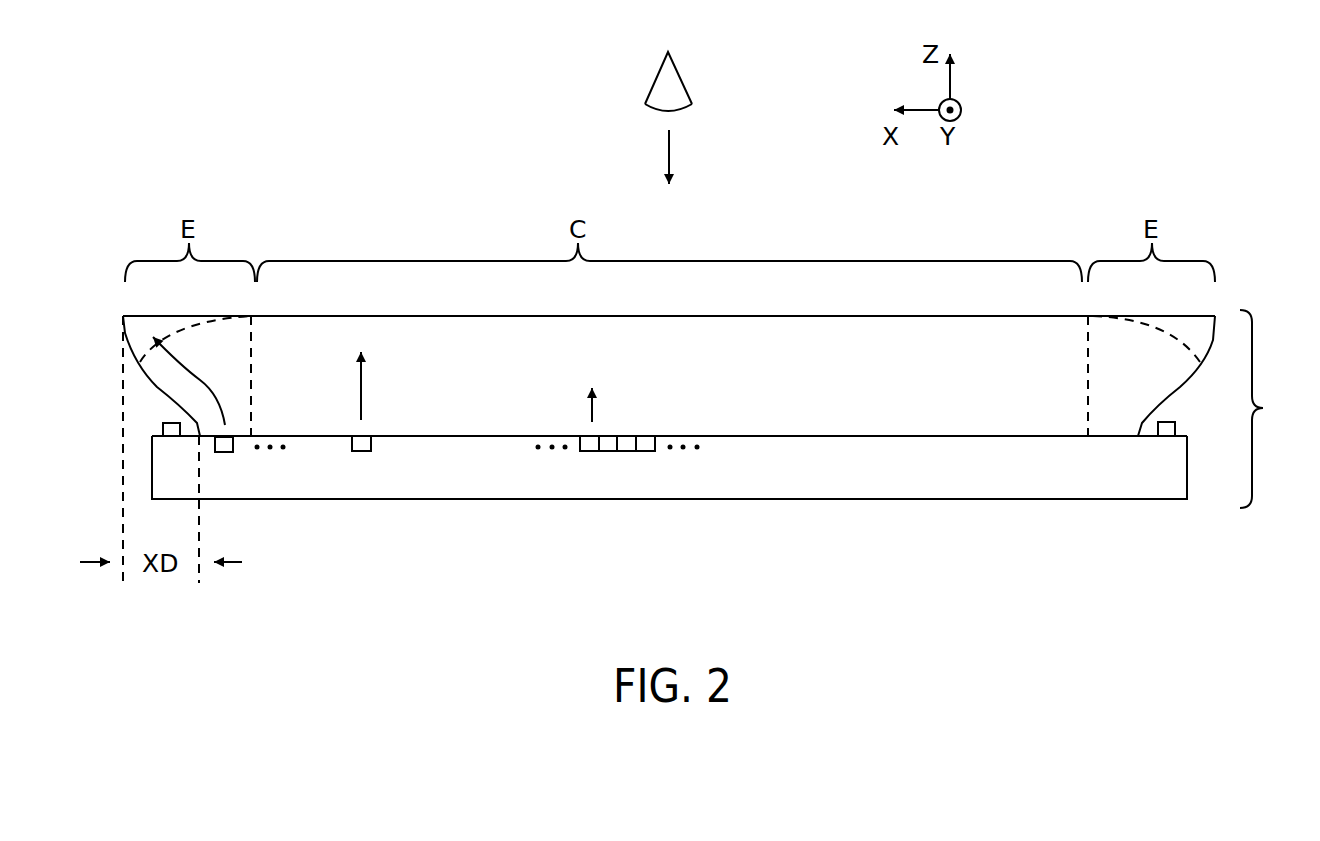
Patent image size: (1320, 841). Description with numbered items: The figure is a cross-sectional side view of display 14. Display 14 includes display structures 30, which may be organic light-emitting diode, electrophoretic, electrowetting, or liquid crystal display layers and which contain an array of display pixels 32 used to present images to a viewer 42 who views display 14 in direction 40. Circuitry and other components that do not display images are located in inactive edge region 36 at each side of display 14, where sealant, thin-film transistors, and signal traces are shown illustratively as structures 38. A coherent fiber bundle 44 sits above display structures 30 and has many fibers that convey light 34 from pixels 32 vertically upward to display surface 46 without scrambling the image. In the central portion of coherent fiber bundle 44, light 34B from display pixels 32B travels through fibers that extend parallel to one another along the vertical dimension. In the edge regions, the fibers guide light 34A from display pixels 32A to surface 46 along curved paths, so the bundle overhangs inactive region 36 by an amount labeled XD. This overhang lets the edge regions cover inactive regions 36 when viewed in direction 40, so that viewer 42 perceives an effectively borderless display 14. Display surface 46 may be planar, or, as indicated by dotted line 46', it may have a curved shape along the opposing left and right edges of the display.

The display 14 is at (1269, 409).
The display structures 30 is at (990, 499).
The display pixels 32 is at (590, 451).
The display pixels 32A is at (224, 452).
The display pixels 32B is at (361, 451).
The light 34 is at (590, 410).
The light 34A is at (172, 362).
The light 34B is at (361, 395).
The inactive edge region 36 is at (163, 407).
The structures 38 is at (163, 426).
The direction 40 is at (670, 152).
The viewer 42 is at (673, 80).
The coherent fiber bundle 44 is at (927, 340).
The display surface 46 is at (669, 293).
The dotted line 46' is at (626, 355).